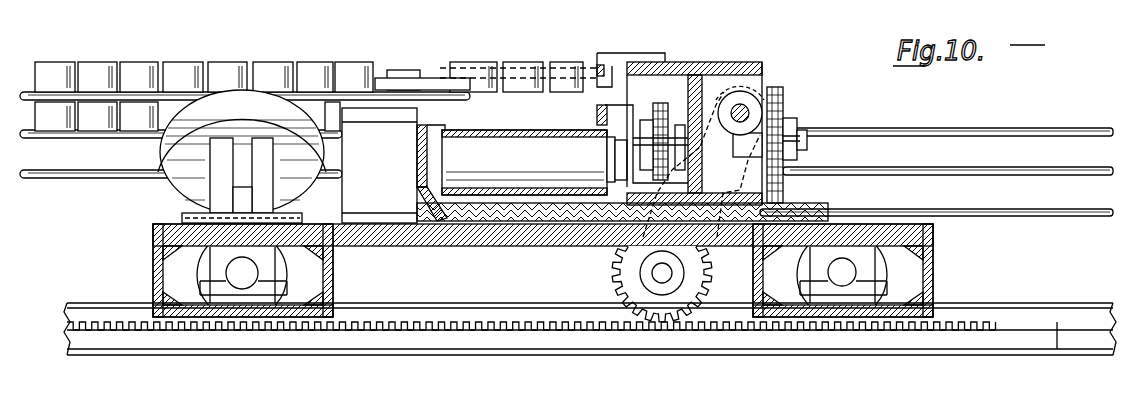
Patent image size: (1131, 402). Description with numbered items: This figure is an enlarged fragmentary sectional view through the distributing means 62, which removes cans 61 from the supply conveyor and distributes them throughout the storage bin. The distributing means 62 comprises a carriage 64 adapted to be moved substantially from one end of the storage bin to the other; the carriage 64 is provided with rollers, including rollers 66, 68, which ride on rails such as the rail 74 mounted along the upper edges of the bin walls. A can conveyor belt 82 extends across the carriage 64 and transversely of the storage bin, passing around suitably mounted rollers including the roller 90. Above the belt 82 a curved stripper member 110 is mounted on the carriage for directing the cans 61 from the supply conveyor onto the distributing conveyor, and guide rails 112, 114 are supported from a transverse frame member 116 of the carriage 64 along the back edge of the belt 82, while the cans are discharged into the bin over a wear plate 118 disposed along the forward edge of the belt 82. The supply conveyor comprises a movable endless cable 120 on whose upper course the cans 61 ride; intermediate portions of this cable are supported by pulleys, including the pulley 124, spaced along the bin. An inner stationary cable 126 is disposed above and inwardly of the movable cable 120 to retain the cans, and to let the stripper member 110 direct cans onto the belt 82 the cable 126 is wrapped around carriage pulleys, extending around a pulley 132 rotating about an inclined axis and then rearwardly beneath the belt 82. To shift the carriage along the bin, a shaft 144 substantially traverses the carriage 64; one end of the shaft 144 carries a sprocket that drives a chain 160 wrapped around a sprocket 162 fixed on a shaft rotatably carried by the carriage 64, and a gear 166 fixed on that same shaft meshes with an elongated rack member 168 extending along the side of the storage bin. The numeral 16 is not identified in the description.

The pinion gear 16 is at (626, 303).
The cans 61 is at (315, 68).
The distributing means 62 is at (770, 61).
The carriage 64 is at (510, 256).
The roller 66 is at (207, 266).
The roller 68 is at (868, 252).
The rail 74 is at (1055, 308).
The can conveyor belt 82 is at (527, 133).
The roller 90 is at (438, 198).
The curved stripper member 110 is at (483, 68).
The guide rail 112 is at (593, 108).
The guide rail 114 is at (600, 65).
The transverse frame member 116 is at (670, 63).
The wear plate 118 is at (413, 134).
The movable endless cable 120 is at (52, 202).
The pulley 124 is at (1010, 128).
The inner stationary cable 126 is at (137, 98).
The pulley 132 is at (188, 180).
The shaft 144 is at (752, 121).
The chain 160 is at (717, 250).
The sprocket 162 is at (640, 262).
The gear 166 is at (617, 290).
The elongated rack member 168 is at (892, 340).